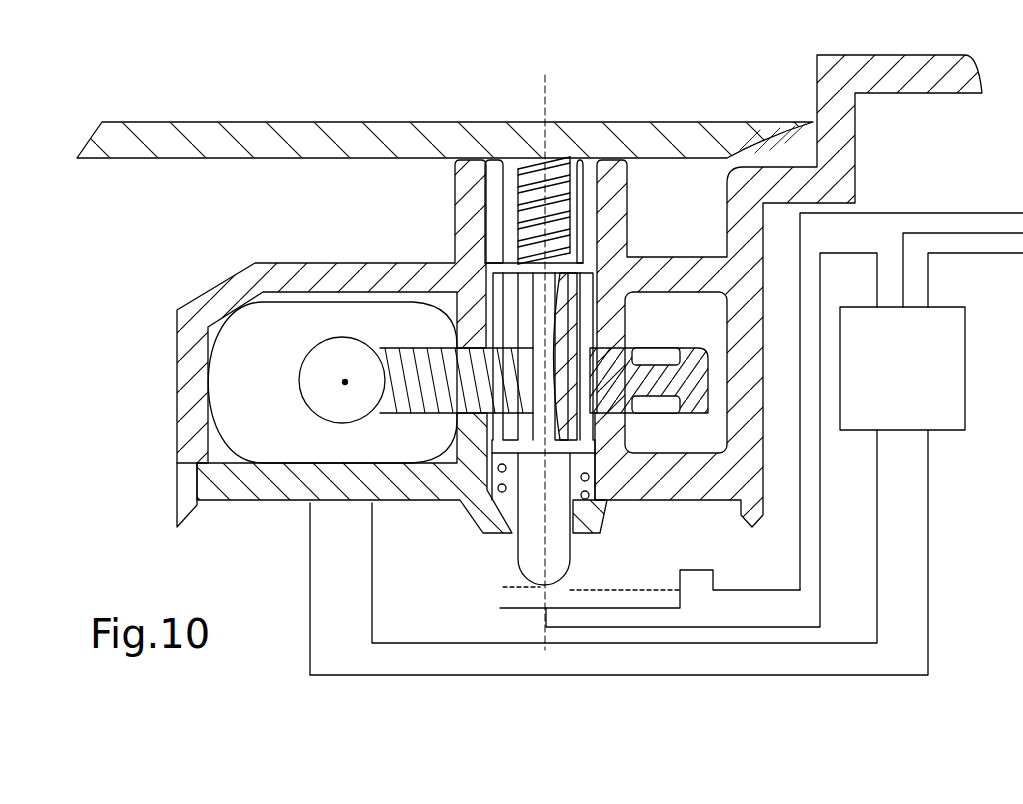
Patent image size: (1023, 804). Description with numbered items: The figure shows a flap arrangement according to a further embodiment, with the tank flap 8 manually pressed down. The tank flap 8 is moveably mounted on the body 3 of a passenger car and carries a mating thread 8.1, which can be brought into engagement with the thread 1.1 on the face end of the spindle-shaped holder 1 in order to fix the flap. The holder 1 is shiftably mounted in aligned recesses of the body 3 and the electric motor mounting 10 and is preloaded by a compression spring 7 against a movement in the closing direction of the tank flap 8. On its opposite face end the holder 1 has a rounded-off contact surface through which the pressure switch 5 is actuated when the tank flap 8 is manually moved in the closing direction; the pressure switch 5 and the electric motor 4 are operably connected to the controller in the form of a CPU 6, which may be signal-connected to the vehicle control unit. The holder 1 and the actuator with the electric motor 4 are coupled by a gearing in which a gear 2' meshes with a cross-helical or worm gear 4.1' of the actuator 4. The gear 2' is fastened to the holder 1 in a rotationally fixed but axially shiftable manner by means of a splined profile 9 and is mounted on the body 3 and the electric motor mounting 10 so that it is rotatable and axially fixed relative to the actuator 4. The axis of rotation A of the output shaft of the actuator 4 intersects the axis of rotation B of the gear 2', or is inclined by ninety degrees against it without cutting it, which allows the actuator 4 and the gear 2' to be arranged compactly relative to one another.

The holder 1 is at (538, 555).
The thread 1.1 is at (565, 222).
The gear 2' is at (729, 429).
The body 3 is at (201, 307).
The electric motor 4 is at (268, 403).
The worm gear 4.1' is at (342, 380).
The pressure switch 5 is at (540, 603).
The CPU 6 is at (905, 378).
The compression spring 7 is at (588, 497).
The tank flap 8 is at (347, 137).
The mating thread 8.1 is at (512, 242).
The splined profile 9 is at (525, 320).
The electric motor mounting 10 is at (268, 483).
The axis of rotation of the output shaft A is at (345, 382).
The axis of rotation of the gear B is at (545, 97).